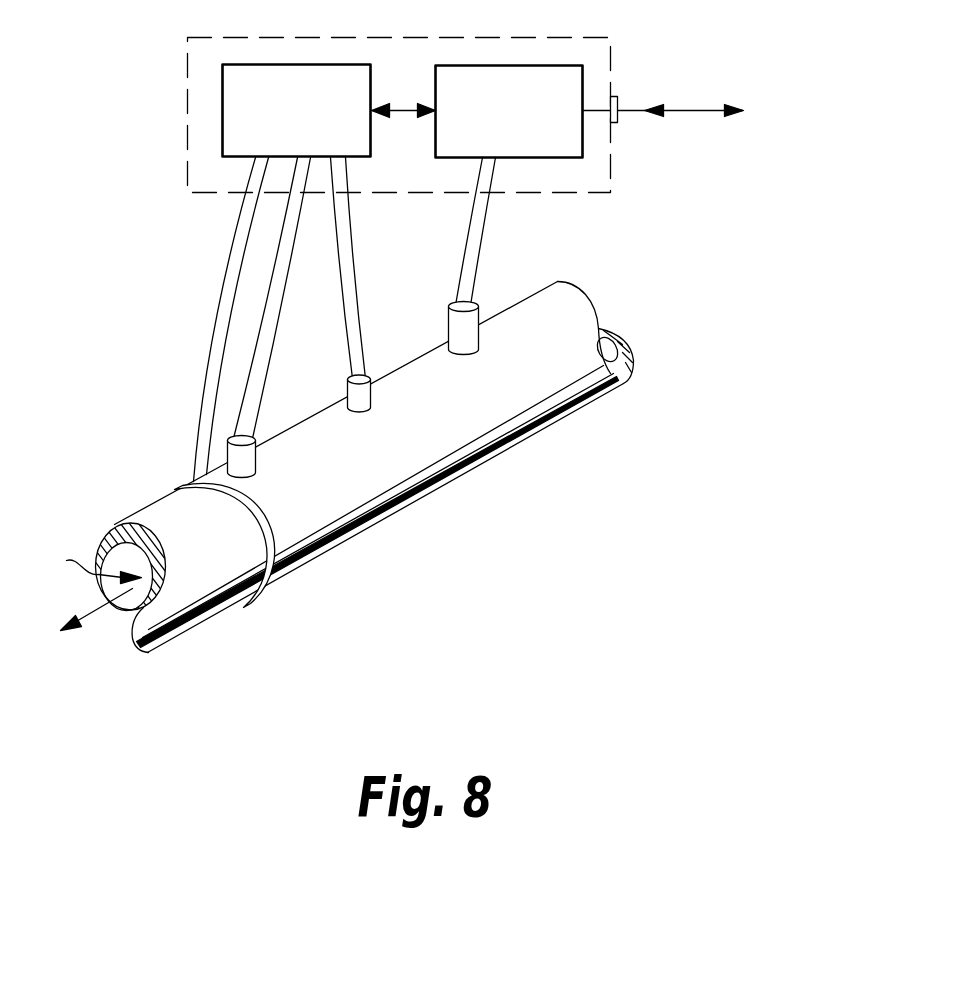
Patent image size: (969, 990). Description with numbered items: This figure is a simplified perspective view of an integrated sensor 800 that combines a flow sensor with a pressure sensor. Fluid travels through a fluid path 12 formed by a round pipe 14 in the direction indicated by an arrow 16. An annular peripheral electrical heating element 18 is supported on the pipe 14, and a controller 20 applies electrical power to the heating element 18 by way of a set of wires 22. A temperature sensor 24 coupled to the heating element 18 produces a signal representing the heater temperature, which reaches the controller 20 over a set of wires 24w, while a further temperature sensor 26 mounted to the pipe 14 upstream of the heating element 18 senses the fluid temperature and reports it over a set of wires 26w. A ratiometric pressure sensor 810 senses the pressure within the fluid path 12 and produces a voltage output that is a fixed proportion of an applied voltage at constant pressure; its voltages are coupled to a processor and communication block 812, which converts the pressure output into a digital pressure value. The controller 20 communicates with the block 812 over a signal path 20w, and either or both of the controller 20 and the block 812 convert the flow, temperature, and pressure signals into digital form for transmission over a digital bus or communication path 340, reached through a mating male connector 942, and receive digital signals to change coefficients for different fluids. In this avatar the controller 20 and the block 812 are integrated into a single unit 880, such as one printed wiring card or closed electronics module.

The fluid path 12 is at (92, 565).
The round pipe 14 is at (592, 284).
The arrow 16 is at (105, 606).
The annular peripheral electrical heating element 18 is at (283, 590).
The controller 20 is at (222, 99).
The signal path 20w is at (404, 111).
The set of wires 22 is at (243, 221).
The temperature sensor 24 is at (254, 437).
The set of wires 24w is at (279, 318).
The further temperature sensor 26 is at (366, 373).
The set of wires 26w is at (358, 284).
The digital bus or communication path 340 is at (631, 116).
The integrated sensor 800 is at (469, 617).
The ratiometric pressure sensor 810 is at (485, 302).
The processor and communication block 812 is at (435, 67).
The single unit 880 is at (567, 193).
The male connector 942 is at (617, 100).